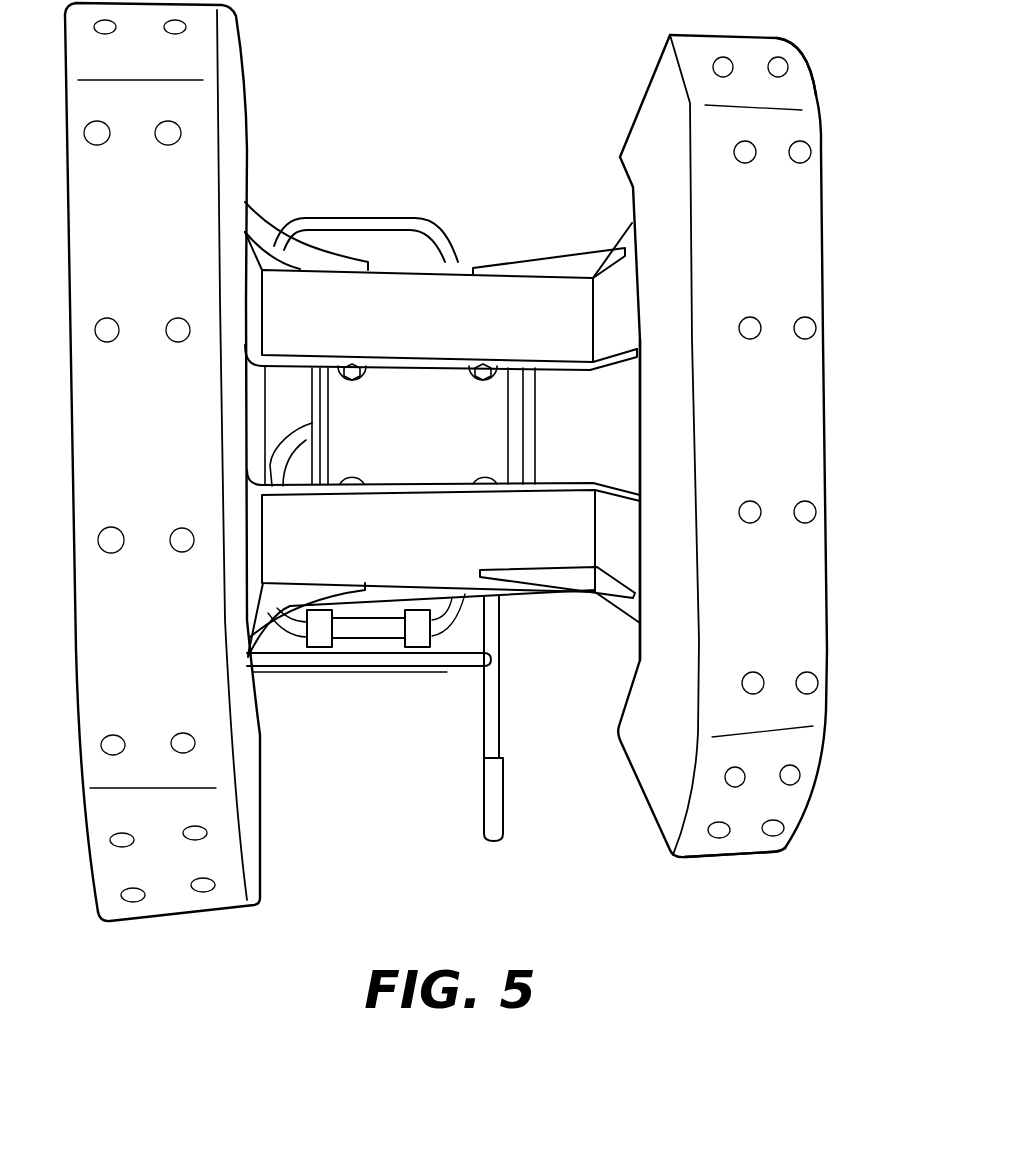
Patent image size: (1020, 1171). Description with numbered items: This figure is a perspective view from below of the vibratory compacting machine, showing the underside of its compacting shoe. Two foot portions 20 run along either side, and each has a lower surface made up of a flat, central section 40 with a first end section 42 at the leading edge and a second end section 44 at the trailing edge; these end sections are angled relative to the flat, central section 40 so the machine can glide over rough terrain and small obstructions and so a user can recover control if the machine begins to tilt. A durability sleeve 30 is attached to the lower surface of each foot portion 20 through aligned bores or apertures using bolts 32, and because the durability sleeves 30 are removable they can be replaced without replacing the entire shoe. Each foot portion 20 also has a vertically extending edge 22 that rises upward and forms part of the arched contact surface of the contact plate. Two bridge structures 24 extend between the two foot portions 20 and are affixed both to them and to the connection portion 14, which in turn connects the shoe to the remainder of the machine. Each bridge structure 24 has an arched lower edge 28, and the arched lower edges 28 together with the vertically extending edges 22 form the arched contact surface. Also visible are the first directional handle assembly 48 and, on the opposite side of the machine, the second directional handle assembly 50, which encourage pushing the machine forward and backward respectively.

The connection portion 14 is at (400, 425).
The foot portion 20 is at (254, 84).
The vertically extending edge 22 is at (660, 419).
The bridge structure 24 is at (442, 440).
The arched lower edge 28 is at (583, 258).
The durability sleeve 30 is at (86, 402).
The bolt 32 is at (110, 320).
The flat central section 40 is at (837, 212).
The first end section 42 is at (812, 802).
The second end section 44 is at (808, 71).
The first directional handle assembly 48 is at (338, 216).
The second directional handle assembly 50 is at (442, 657).